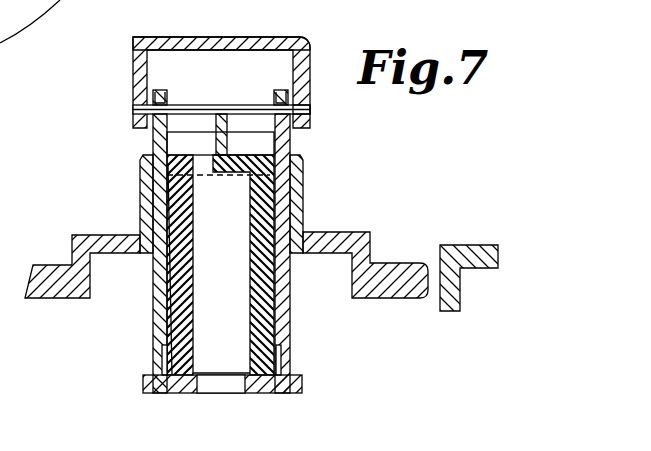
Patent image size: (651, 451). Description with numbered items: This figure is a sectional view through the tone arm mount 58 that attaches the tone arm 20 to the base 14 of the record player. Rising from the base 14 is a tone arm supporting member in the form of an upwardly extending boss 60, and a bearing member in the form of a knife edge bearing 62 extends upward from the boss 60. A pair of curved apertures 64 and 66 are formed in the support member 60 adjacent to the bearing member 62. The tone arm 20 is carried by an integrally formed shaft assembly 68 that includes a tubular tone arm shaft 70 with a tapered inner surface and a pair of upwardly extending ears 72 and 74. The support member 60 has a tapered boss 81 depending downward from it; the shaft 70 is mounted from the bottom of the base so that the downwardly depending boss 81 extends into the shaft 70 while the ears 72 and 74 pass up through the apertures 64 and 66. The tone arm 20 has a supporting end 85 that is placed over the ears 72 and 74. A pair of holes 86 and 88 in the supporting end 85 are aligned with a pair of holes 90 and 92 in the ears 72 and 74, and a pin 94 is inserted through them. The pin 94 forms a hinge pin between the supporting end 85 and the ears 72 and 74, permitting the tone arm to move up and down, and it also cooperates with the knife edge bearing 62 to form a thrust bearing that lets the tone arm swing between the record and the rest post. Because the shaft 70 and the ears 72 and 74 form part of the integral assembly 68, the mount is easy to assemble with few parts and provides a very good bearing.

The base 14 is at (63, 265).
The tone arm 20 is at (258, 35).
The tone arm mount 58 is at (345, 168).
The upwardly extending boss 60 is at (140, 192).
The knife edge bearing 62 is at (220, 122).
The curved aperture 64 is at (153, 145).
The curved aperture 66 is at (288, 150).
The shaft assembly 68 is at (153, 303).
The tone arm shaft 70 is at (290, 310).
The ear 72 is at (158, 92).
The ear 74 is at (287, 92).
The downwardly depending boss 81 is at (177, 322).
The supporting end 85 is at (213, 38).
The hole 86 is at (135, 108).
The hole 88 is at (305, 108).
The hole 90 is at (170, 104).
The hole 92 is at (272, 105).
The pin 94 is at (221, 105).